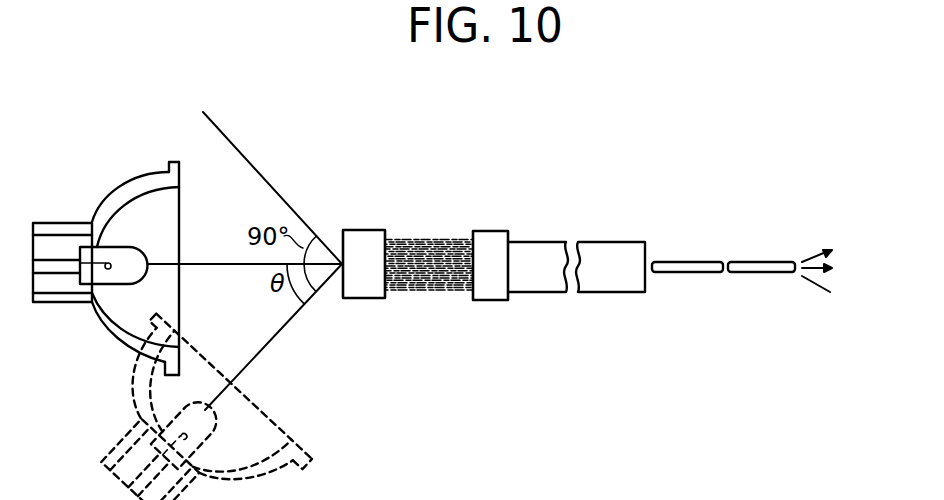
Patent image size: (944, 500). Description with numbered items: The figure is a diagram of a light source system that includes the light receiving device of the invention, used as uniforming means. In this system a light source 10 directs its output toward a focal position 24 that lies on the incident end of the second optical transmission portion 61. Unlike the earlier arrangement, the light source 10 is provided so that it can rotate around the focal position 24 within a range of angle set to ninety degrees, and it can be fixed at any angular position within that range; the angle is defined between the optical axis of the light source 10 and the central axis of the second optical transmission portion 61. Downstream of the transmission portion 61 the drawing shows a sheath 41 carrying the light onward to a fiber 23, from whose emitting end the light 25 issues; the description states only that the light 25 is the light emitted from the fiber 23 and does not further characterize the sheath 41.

The light source 10 is at (116, 171).
The focal position 24 is at (335, 247).
The second optical transmission portion 61 is at (448, 240).
The flexible sheath tube 41 is at (617, 297).
The test fiber 23 is at (778, 272).
The light 25 is at (843, 253).